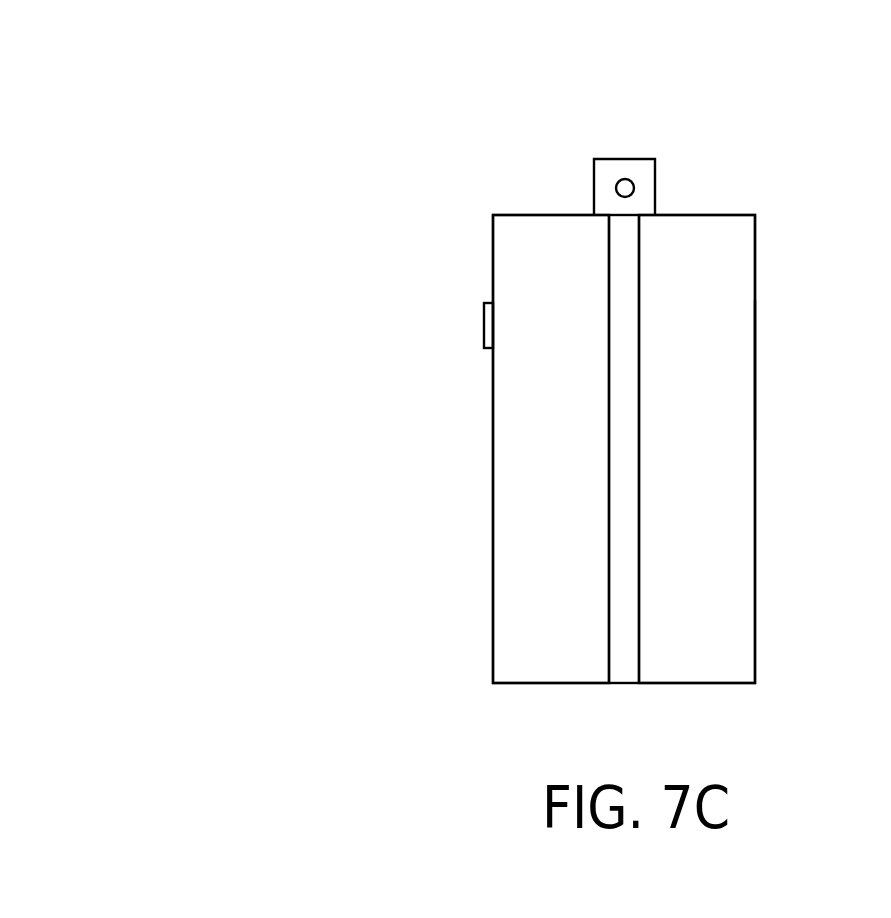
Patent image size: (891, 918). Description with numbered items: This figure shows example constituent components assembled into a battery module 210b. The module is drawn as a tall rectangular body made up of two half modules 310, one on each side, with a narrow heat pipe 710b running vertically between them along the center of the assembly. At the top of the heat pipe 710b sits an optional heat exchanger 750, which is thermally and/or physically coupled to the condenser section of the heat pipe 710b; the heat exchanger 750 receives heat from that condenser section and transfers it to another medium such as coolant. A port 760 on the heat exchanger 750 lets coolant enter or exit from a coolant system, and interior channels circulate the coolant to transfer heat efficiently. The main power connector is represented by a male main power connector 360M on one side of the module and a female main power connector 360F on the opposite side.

The battery module 210b is at (272, 68).
The half module 310 is at (580, 475).
The heat pipe 710b is at (625, 653).
The heat exchanger 750 is at (655, 159).
The port 760 is at (625, 188).
The male main power connector 360M is at (484, 323).
The female main power connector 360F is at (755, 367).